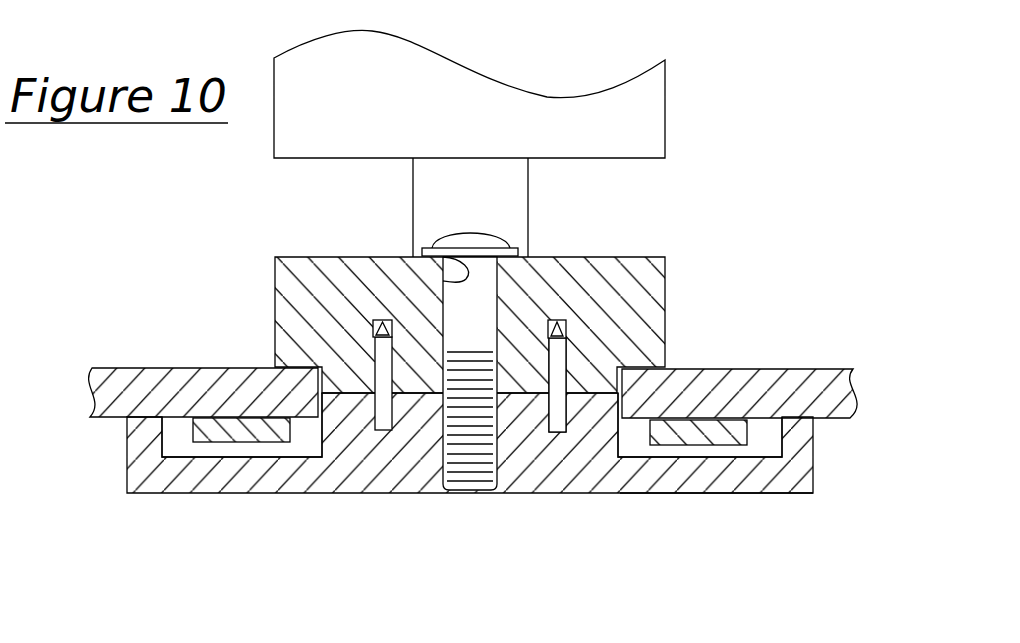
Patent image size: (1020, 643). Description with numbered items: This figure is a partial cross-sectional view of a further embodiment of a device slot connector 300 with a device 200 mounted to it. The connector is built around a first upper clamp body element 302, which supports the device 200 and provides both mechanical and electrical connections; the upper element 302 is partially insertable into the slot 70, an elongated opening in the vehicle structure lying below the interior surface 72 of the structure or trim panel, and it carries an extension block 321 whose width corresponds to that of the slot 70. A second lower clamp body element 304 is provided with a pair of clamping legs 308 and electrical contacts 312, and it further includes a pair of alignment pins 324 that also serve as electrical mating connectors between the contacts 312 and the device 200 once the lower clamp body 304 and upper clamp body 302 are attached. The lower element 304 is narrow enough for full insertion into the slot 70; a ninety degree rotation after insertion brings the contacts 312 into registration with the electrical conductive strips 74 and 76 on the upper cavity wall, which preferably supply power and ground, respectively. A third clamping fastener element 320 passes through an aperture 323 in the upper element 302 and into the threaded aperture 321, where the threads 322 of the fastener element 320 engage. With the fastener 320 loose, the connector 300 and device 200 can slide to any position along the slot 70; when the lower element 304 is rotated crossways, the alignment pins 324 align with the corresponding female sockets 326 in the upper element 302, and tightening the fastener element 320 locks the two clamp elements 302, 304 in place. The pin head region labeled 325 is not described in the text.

The device 200 is at (426, 108).
The device slot connector 300 is at (314, 240).
The first upper clamp body element 302 is at (666, 340).
The second lower clamp body element 304 is at (675, 492).
The clamping legs 308 is at (125, 445).
The electrical contacts 312 is at (185, 450).
The clamping fastener element 320 is at (517, 247).
The extension block / threaded aperture 321 is at (287, 397).
The threads 322 is at (443, 467).
The aperture 323 is at (465, 255).
The alignment pins 324 is at (382, 348).
The right pin head 325 is at (551, 320).
The female sockets 326 is at (377, 319).
The slot 70 is at (558, 351).
The interior surface 72 is at (137, 367).
The electrical conductor 74 is at (773, 463).
The electrical conductor 76 is at (182, 451).